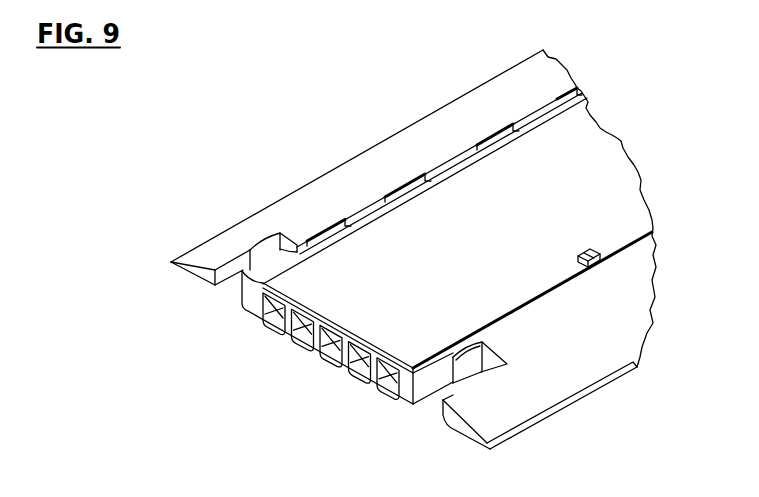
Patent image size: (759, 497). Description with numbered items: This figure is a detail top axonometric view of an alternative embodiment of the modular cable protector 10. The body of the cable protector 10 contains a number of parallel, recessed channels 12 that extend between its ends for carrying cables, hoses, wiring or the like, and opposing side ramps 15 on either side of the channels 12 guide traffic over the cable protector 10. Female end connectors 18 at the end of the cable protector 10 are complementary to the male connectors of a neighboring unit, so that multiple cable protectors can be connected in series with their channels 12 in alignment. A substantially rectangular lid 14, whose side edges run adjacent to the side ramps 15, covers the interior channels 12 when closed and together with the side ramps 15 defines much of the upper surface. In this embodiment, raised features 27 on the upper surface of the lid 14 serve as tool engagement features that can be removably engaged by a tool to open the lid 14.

The cable protector 10 is at (179, 224).
The channels 12 is at (331, 354).
The lid 14 is at (570, 184).
The side ramps 15 is at (328, 197).
The female end connectors 18 is at (232, 288).
The raised features 27 is at (596, 252).